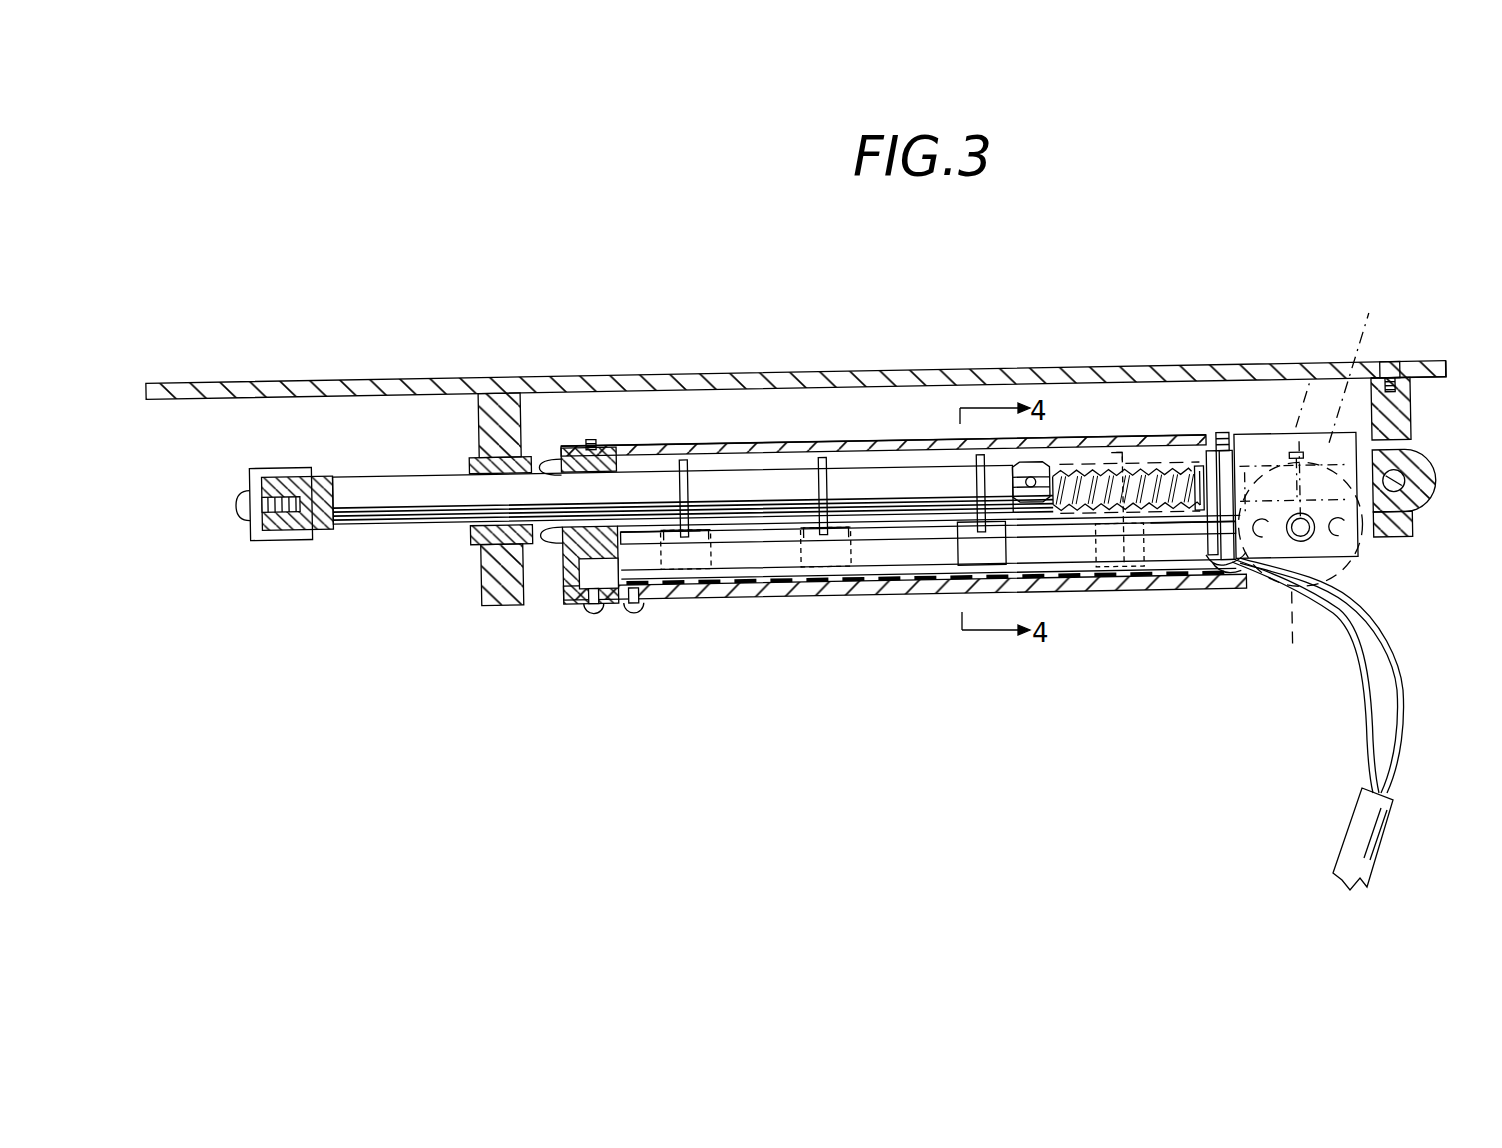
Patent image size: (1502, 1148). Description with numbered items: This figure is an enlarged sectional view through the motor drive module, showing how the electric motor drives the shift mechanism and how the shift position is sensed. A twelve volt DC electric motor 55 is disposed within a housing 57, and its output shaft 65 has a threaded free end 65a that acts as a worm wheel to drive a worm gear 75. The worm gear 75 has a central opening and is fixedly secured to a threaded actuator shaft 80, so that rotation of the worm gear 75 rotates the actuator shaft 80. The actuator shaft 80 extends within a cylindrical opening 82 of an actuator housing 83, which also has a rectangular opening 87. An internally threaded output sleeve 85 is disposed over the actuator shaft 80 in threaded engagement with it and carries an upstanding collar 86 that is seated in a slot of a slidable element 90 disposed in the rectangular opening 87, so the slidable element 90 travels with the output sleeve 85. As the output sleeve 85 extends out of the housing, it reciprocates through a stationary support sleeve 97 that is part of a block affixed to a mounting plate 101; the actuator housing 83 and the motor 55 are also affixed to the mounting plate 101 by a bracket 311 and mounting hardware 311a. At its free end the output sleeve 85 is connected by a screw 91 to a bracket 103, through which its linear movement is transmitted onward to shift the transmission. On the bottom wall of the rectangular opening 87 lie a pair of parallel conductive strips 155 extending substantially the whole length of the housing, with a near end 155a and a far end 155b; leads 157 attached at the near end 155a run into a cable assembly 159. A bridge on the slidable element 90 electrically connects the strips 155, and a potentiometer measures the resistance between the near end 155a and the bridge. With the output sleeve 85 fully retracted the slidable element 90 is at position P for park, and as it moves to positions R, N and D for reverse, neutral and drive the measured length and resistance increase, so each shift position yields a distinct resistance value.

The mounting plate 101 is at (232, 380).
The stationary support sleeve 97 is at (468, 533).
The output sleeve 85 is at (389, 474).
The bracket 103 is at (272, 537).
The screw 91 is at (240, 510).
The cylindrical opening 82 is at (735, 458).
The actuator housing 83 is at (840, 430).
The rectangular opening 87 is at (890, 558).
The conductive strips 155 is at (945, 585).
The near end of the strips 155a is at (1180, 570).
The far end of the strips 155b is at (662, 585).
The upstanding collar 86 is at (682, 462).
The slidable element 90 is at (788, 596).
The threaded actuator shaft 80 is at (1127, 465).
The DC electric motor 55 is at (1268, 482).
The worm gear 75 is at (1318, 358).
The output shaft 65 is at (1365, 571).
The threaded free end 65a is at (1302, 637).
The housing 57 is at (1375, 337).
The bracket 311 is at (1408, 408).
The mounting hardware 311a is at (1388, 363).
The leads 157 is at (1197, 573).
The cable assembly 159 is at (1367, 840).
The drive position D is at (702, 562).
The neutral position N is at (858, 582).
The reverse position R is at (1045, 575).
The park position P is at (1125, 570).